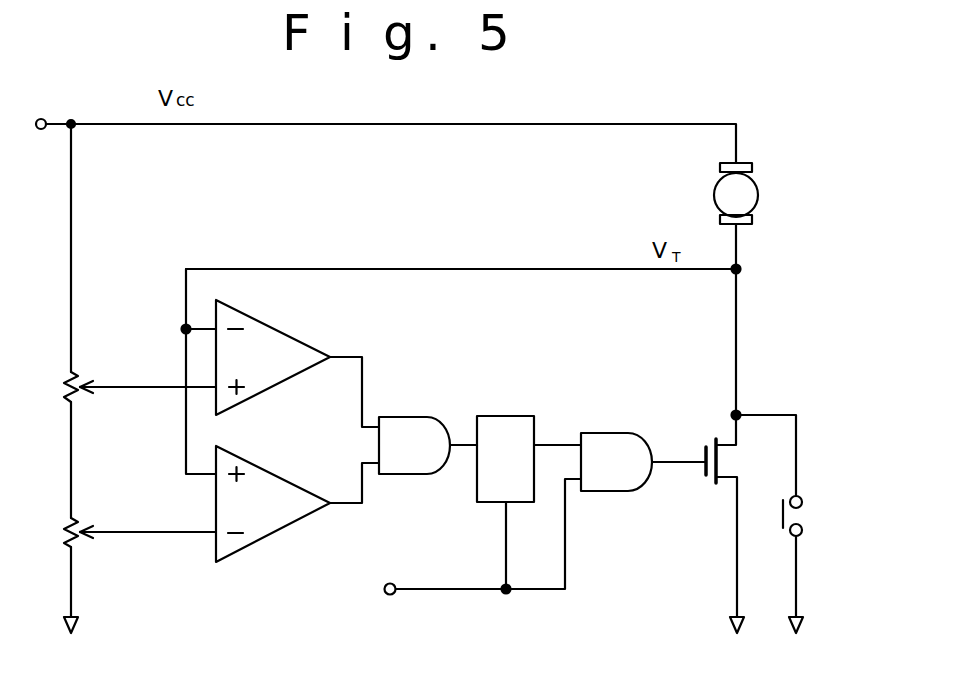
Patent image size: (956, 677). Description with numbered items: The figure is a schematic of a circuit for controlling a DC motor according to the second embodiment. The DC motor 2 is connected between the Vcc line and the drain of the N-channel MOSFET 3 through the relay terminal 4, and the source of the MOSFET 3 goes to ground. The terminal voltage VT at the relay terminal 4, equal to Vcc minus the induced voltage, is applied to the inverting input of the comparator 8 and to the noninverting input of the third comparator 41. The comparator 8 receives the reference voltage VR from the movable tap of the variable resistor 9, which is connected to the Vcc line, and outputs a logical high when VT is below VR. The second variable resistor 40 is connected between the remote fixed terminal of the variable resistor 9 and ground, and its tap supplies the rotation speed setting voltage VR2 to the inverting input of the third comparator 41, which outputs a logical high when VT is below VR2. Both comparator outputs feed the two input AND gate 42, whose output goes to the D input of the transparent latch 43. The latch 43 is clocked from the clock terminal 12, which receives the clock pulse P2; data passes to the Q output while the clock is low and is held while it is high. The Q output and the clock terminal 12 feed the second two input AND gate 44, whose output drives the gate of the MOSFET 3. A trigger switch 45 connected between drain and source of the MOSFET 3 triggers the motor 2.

The DC motor 2 is at (758, 196).
The N-channel MOSFET 3 is at (730, 442).
The relay terminal 4 is at (740, 272).
The comparator 8 is at (292, 337).
The variable resistor 9 is at (94, 396).
The clock terminal 12 is at (397, 583).
The second variable resistor 40 is at (92, 540).
The third comparator 41 is at (300, 487).
The two input AND gate 42 is at (424, 416).
The transparent latch 43 is at (516, 416).
The second two input AND gate 44 is at (610, 433).
The trigger switch 45 is at (783, 520).